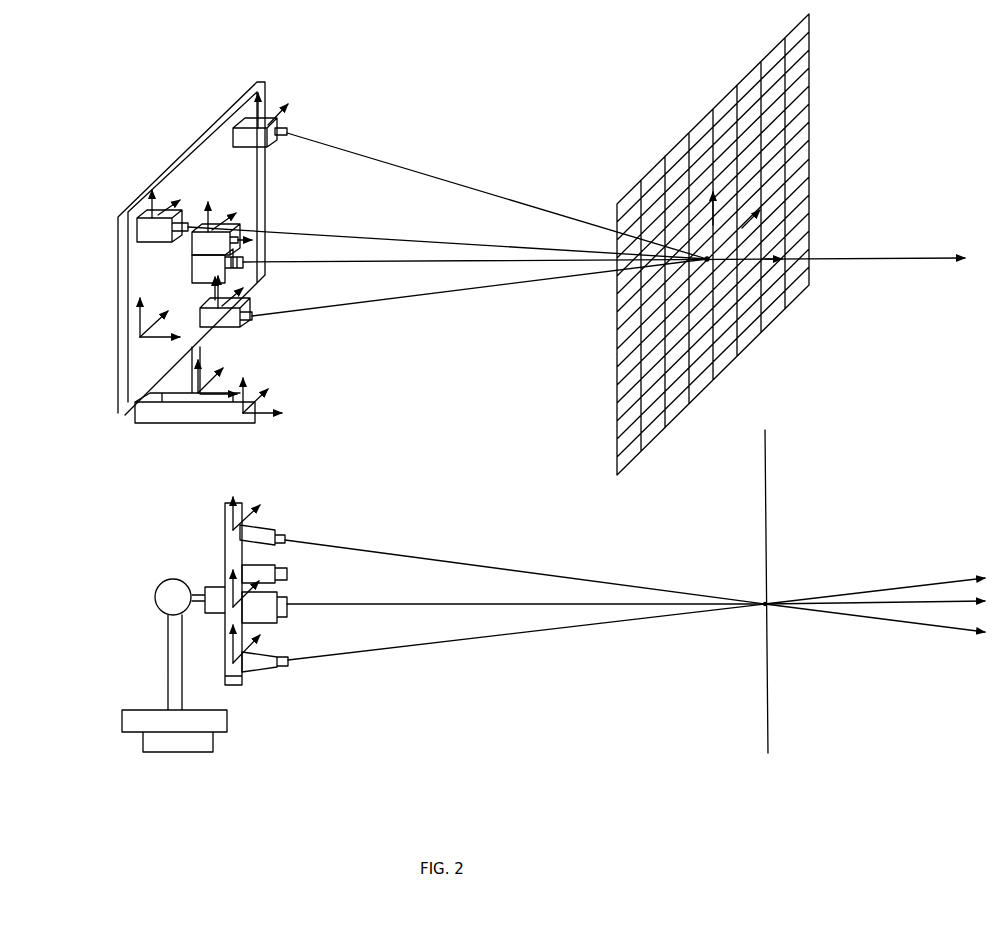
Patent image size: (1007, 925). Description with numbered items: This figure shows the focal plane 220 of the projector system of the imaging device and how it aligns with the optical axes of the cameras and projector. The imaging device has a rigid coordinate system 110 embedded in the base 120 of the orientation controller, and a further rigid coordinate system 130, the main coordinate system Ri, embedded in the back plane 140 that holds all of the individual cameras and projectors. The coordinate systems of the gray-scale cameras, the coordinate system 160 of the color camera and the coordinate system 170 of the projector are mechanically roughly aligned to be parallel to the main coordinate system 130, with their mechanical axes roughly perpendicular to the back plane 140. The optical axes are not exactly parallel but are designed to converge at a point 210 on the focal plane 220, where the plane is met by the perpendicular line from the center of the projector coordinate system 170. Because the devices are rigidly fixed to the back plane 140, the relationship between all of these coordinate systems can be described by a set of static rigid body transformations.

The rigid coordinate system 110 is at (258, 416).
The base 120 is at (188, 424).
The rigid coordinate system 130 is at (156, 340).
The back plane 140 is at (143, 283).
The coordinate system 160 is at (214, 230).
The coordinate system 170 is at (200, 279).
The point of convergence 210 is at (712, 265).
The focal plane 220 is at (705, 395).